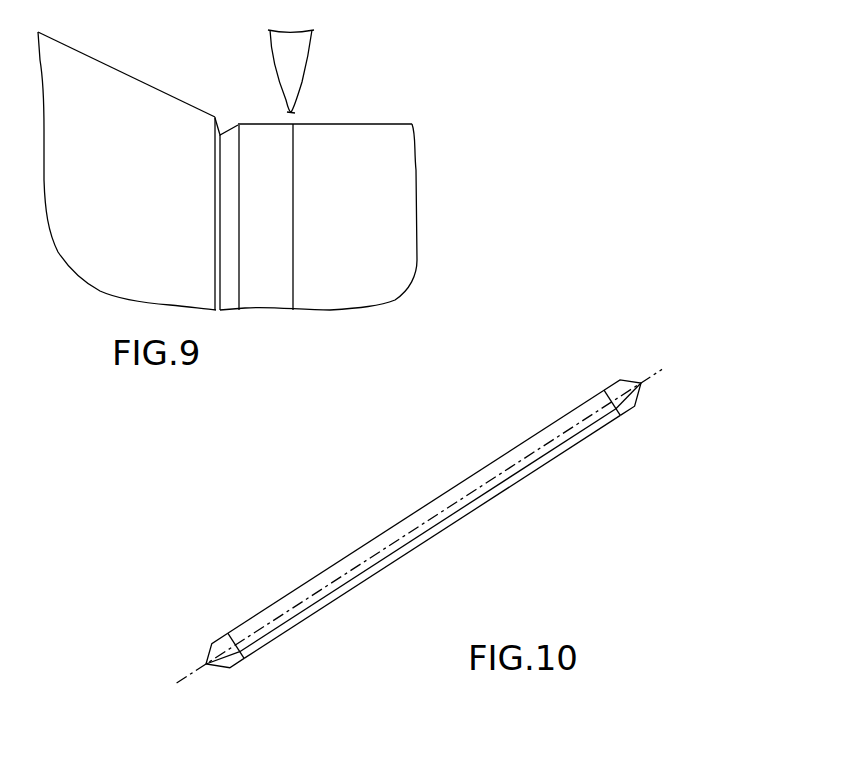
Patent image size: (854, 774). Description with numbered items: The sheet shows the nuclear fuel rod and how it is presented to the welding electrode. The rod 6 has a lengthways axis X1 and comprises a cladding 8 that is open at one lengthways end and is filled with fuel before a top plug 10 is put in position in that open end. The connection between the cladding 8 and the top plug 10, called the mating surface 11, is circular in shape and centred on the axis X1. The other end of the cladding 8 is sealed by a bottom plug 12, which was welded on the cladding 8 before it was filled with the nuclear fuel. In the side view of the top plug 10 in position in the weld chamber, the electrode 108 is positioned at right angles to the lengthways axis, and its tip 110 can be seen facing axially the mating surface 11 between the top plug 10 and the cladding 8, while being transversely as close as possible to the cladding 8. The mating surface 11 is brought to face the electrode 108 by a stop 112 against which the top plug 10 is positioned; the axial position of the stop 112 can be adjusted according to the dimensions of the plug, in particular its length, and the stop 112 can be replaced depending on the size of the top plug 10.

In FIG. 10, the rod 6 is at (447, 524).
In FIG. 9, the cladding 8 is at (363, 292).
In FIG. 10, the cladding 8 is at (445, 519).
In FIG. 9, the top plug 10 is at (259, 292).
In FIG. 10, the top plug 10 is at (632, 400).
In FIG. 9, the mating surface 11 is at (293, 290).
In FIG. 10, the mating surface 11 is at (621, 416).
In FIG. 10, the bottom plug 12 is at (231, 668).
In FIG. 9, the electrode 108 is at (300, 48).
In FIG. 9, the tip 110 is at (295, 113).
In FIG. 9, the stop 112 is at (148, 92).
In FIG. 10, the lengthways axis X1 is at (656, 373).